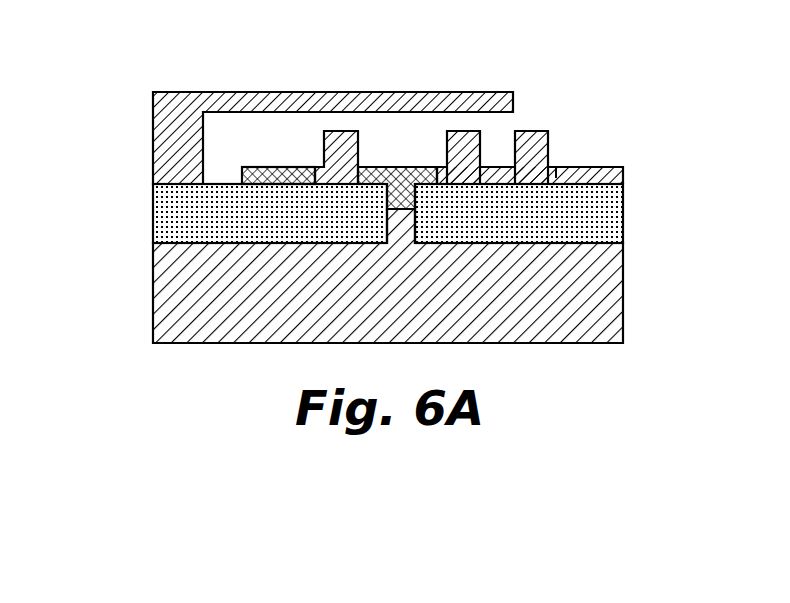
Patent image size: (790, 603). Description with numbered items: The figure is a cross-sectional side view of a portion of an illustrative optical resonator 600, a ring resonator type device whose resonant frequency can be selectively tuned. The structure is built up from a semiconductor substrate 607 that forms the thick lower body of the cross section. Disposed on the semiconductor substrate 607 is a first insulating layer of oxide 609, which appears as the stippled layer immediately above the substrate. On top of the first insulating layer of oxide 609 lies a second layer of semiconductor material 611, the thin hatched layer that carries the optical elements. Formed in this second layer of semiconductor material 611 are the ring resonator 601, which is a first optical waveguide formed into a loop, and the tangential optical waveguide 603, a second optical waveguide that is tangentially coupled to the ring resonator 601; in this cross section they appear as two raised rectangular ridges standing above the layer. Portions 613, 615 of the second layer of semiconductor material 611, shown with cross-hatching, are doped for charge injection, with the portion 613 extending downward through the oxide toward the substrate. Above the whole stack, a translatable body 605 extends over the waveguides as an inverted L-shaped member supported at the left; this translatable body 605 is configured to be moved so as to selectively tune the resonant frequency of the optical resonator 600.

The optical resonator 600 is at (111, 70).
The ring resonator 601 is at (467, 131).
The tangential optical waveguide 603 is at (533, 131).
The translatable body 605 is at (465, 92).
The semiconductor substrate 607 is at (607, 301).
The first insulating layer of oxide 609 is at (607, 222).
The second layer of semiconductor material 611 is at (623, 174).
The doped portion of the second layer of semiconductor material 613 is at (398, 167).
The doped portion of the second layer of semiconductor material 615 is at (258, 167).